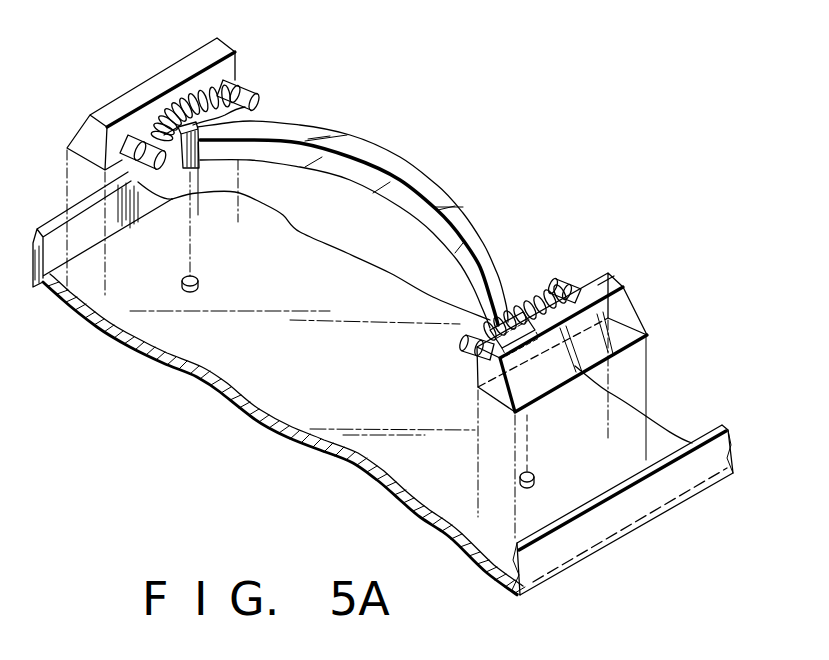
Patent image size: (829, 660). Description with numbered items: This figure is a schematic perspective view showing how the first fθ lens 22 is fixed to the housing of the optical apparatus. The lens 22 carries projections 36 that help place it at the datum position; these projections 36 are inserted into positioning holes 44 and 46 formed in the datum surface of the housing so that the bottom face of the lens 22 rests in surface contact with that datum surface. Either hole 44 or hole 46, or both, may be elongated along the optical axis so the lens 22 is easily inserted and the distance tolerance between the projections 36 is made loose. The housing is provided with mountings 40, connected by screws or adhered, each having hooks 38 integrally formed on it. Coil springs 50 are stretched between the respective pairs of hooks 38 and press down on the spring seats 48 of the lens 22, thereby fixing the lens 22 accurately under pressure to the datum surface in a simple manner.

The first fθ lens 22 is at (443, 181).
The projections 36 is at (183, 170).
The hooks 38 is at (137, 130).
The mountings 40 is at (236, 51).
The positioning hole 44 is at (534, 474).
The positioning hole 46 is at (198, 279).
The spring seats 48 is at (200, 131).
The coil springs 50 is at (193, 95).